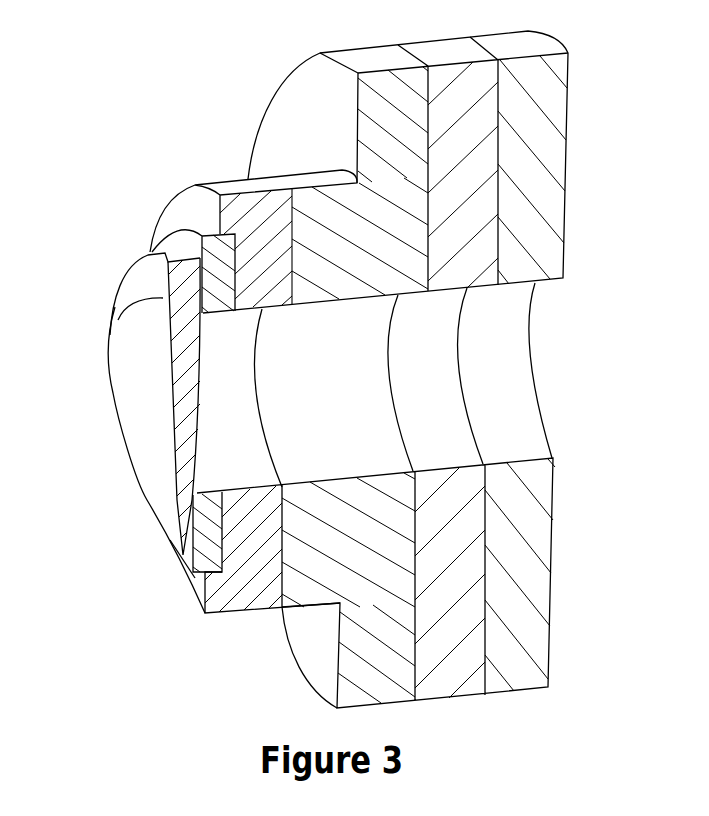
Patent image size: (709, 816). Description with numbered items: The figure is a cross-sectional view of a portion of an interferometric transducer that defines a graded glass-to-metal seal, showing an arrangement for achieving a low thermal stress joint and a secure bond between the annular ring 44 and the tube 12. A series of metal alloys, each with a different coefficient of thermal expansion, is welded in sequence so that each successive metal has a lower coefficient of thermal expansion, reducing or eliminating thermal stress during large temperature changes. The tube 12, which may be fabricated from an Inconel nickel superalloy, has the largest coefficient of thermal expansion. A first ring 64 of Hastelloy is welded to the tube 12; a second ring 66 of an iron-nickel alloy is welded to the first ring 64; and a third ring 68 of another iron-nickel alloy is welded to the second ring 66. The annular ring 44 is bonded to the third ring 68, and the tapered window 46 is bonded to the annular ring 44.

The tube 12 is at (532, 160).
The first ring 64 is at (455, 205).
The second ring 66 is at (318, 332).
The third ring 68 is at (230, 392).
The tapered window 46 is at (152, 458).
The annular ring 44 is at (205, 573).